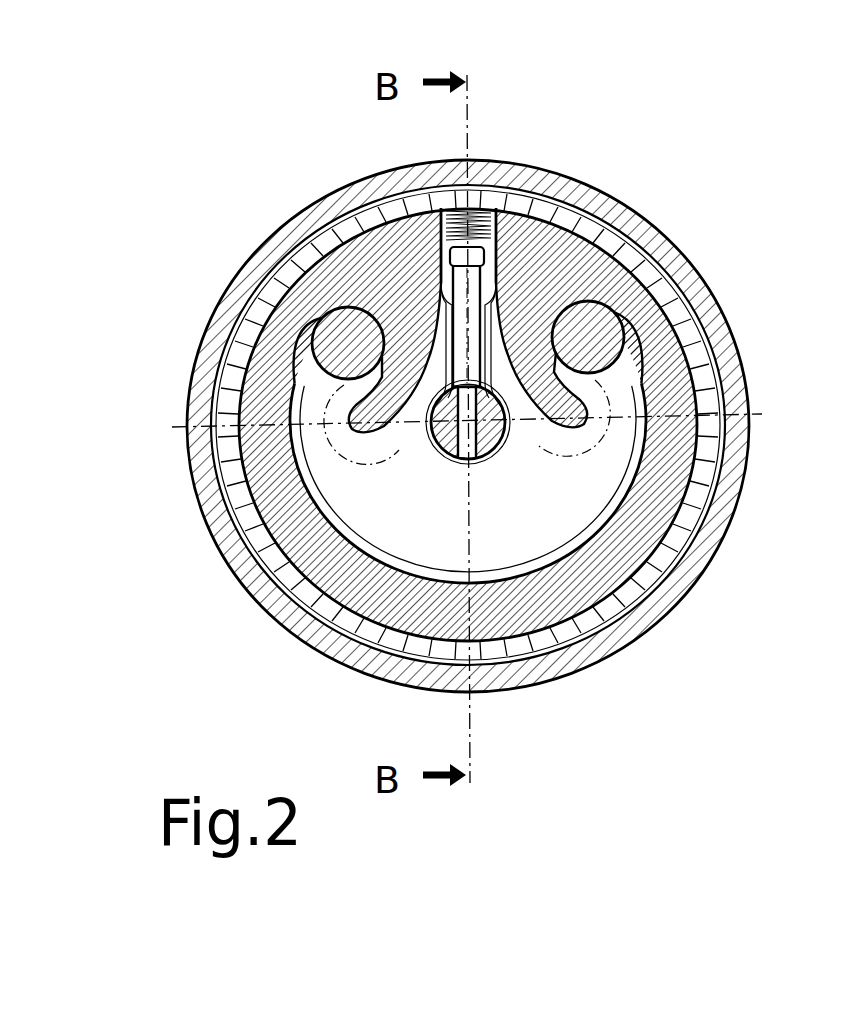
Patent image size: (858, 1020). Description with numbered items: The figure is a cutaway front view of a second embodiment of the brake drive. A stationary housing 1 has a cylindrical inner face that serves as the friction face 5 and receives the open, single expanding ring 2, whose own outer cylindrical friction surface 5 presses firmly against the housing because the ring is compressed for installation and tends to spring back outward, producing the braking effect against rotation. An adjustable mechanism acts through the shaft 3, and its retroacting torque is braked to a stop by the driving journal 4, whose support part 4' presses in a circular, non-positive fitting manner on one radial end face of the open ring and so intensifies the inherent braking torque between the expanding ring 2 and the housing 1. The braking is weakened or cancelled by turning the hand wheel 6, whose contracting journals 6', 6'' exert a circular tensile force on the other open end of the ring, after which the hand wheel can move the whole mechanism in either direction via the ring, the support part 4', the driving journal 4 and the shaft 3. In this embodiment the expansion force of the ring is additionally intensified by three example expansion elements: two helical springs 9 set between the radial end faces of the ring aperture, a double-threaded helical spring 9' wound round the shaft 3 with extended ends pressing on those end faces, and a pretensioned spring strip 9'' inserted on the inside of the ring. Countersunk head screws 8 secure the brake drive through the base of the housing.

The housing 1 is at (710, 443).
The expanding ring 2 is at (653, 502).
The shaft 3 is at (490, 423).
The driving journal 4 is at (588, 301).
The support part 4' is at (588, 265).
The friction face 5 is at (585, 607).
The hand wheel 6 is at (437, 426).
The contracting journal 6' is at (674, 325).
The contracting journal 6'' is at (251, 343).
The countersunk head screws 8 is at (358, 445).
The helical springs 9 is at (516, 189).
The double-threaded helical spring 9' is at (498, 456).
The spring strip 9'' is at (414, 530).